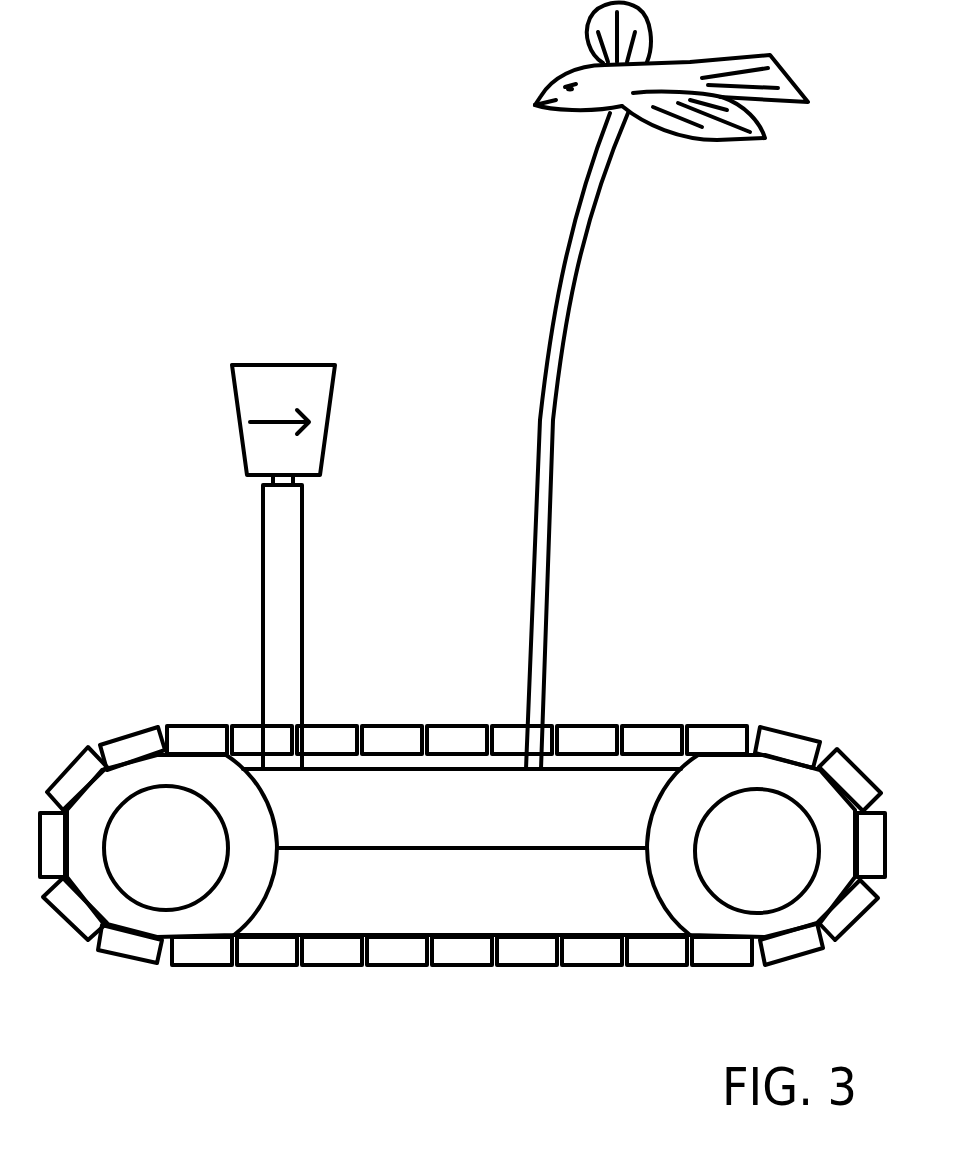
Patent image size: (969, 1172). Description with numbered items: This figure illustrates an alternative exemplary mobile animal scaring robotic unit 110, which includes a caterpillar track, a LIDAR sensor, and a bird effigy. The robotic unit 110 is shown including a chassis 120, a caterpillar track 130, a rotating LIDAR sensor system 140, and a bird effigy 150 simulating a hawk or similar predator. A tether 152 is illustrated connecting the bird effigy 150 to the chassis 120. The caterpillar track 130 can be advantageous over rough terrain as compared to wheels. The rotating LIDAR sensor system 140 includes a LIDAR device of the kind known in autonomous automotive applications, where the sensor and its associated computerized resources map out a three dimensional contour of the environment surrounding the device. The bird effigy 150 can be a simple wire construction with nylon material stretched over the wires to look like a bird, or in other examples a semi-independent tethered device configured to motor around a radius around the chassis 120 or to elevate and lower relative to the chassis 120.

The robotic unit 110 is at (128, 489).
The chassis 120 is at (505, 797).
The caterpillar track 130 is at (653, 725).
The rotating LIDAR sensor system 140 is at (320, 403).
The bird effigy 150 is at (713, 143).
The tether 152 is at (555, 428).